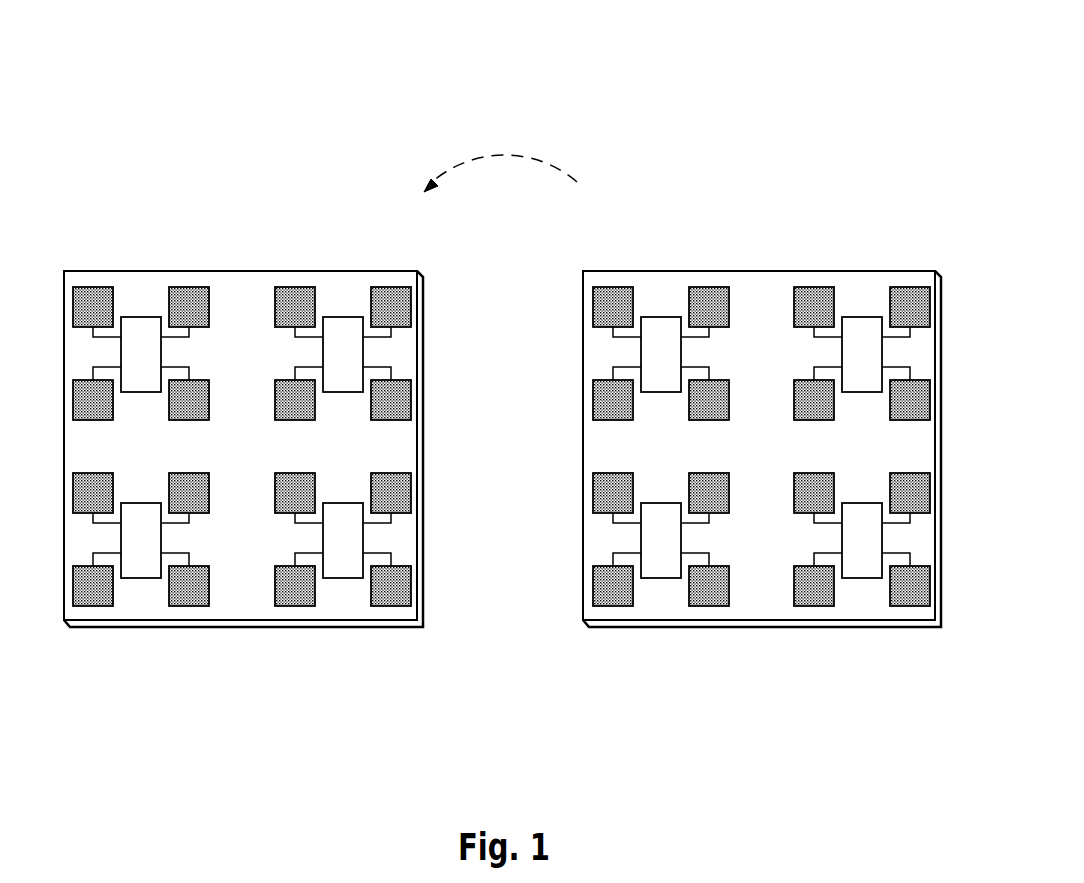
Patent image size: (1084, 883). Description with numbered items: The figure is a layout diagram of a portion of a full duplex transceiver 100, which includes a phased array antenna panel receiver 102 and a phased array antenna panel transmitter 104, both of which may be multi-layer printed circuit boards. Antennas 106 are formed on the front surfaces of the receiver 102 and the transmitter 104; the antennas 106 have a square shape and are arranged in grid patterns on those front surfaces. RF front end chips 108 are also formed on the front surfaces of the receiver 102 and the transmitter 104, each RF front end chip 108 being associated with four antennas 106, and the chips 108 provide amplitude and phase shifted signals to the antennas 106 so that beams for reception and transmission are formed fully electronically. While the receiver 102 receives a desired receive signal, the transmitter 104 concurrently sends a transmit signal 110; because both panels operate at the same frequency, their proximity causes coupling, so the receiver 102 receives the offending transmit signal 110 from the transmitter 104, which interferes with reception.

The full duplex transceiver 100 is at (826, 72).
The phased array antenna panel receiver 102 is at (300, 271).
The phased array antenna panel transmitter 104 is at (720, 271).
The antennas 106 is at (296, 305).
The RF front end chips 108 is at (347, 316).
The transmit signal 110 is at (507, 148).